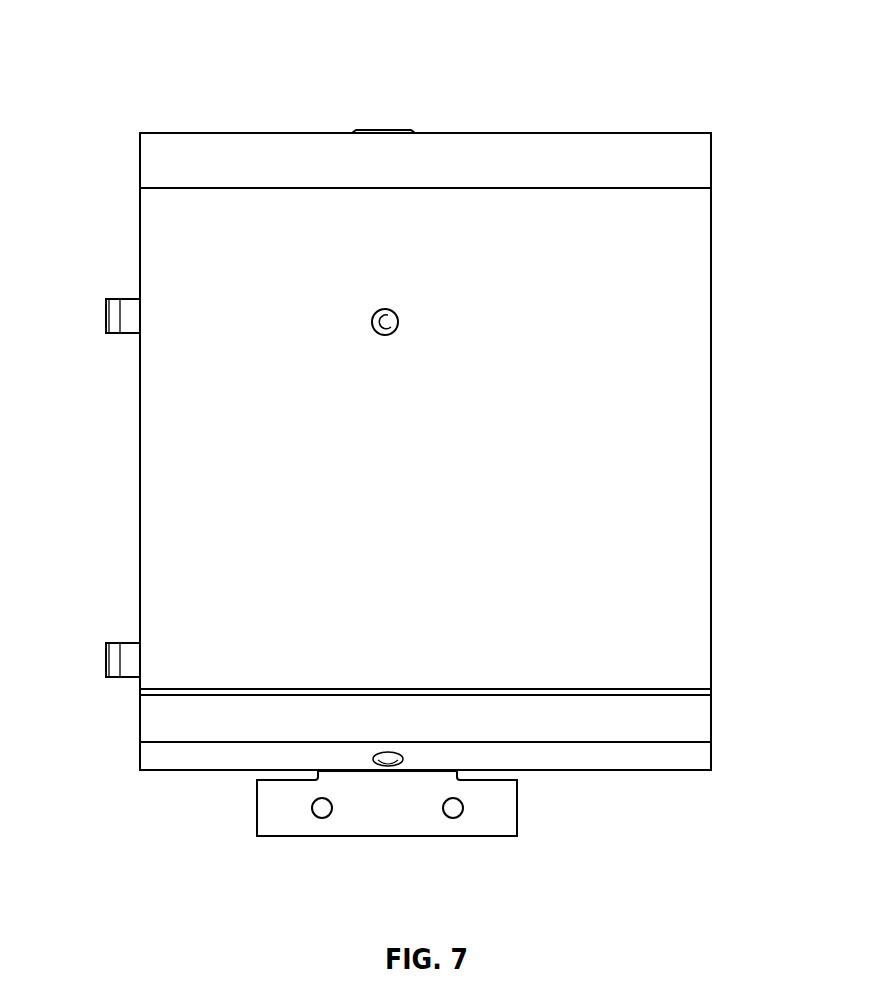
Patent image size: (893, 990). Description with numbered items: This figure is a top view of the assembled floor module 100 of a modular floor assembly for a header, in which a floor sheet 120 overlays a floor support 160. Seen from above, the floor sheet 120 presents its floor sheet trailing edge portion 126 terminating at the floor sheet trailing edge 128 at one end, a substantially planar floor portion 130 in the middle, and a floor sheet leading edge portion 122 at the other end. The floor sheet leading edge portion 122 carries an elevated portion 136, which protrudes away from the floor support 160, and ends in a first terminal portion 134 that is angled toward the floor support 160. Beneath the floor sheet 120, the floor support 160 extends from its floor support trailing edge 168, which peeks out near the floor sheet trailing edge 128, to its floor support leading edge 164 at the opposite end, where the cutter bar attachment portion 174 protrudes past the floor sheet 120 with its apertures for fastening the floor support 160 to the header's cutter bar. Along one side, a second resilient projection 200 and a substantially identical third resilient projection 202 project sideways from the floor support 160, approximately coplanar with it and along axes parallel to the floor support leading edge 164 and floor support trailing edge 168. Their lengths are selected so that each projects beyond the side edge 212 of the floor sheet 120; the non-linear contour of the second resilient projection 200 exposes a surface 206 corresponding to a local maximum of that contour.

The floor module 100 is at (413, 460).
The floor sheet 120 is at (134, 244).
The floor sheet leading edge portion 122 is at (433, 730).
The floor sheet trailing edge portion 126 is at (137, 134).
The floor sheet trailing edge 128 is at (648, 133).
The floor portion 130 is at (720, 187).
The first terminal portion 134 is at (722, 744).
The elevated portion 136 is at (702, 711).
The floor support 160 is at (371, 836).
The floor support leading edge 164 is at (378, 836).
The floor support trailing edge 168 is at (390, 131).
The cutter bar attachment portion 174 is at (525, 780).
The second resilient projection 200 is at (81, 631).
The third resilient projection 202 is at (104, 316).
The surface 206 is at (105, 660).
The side edge 212 is at (140, 423).